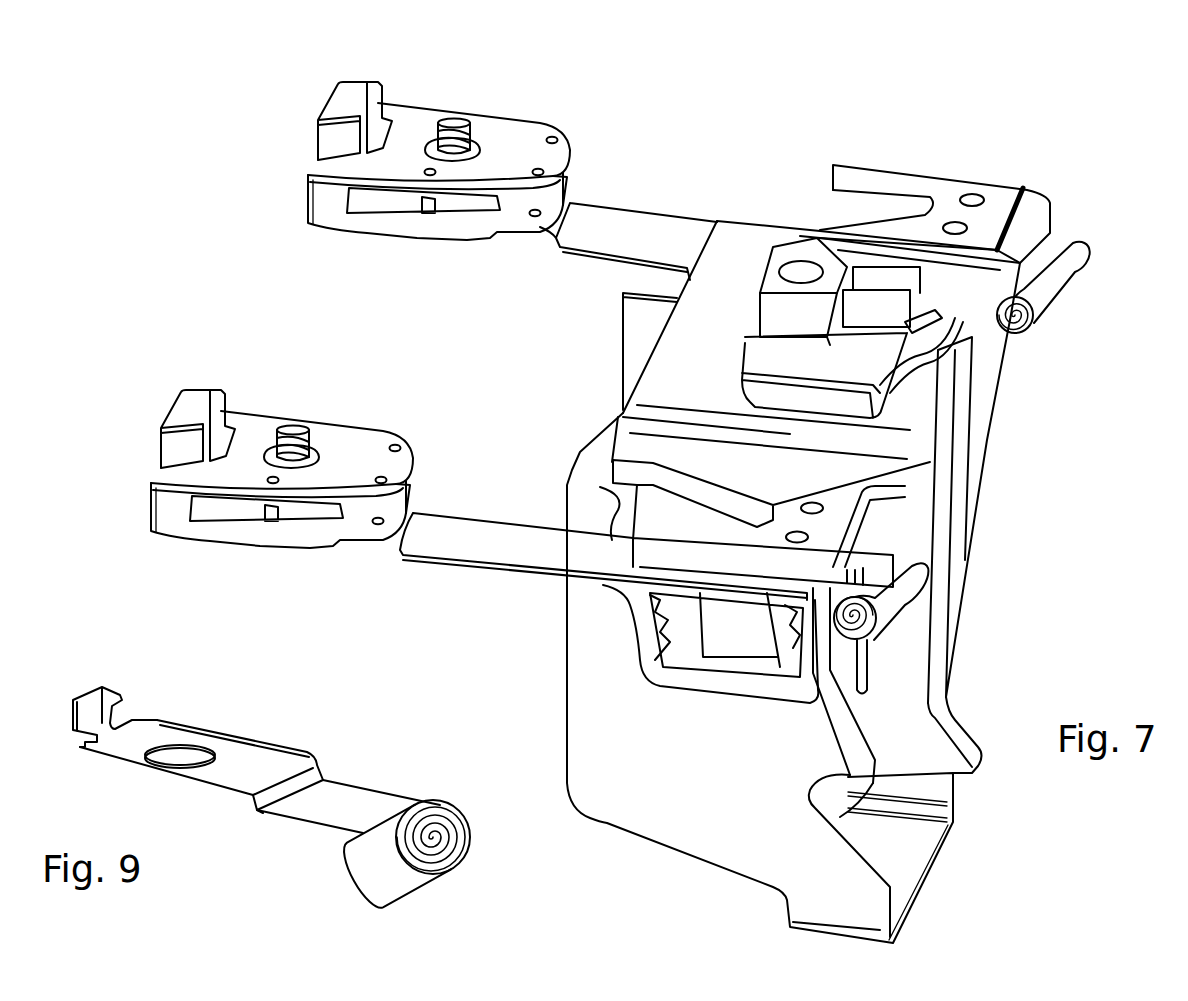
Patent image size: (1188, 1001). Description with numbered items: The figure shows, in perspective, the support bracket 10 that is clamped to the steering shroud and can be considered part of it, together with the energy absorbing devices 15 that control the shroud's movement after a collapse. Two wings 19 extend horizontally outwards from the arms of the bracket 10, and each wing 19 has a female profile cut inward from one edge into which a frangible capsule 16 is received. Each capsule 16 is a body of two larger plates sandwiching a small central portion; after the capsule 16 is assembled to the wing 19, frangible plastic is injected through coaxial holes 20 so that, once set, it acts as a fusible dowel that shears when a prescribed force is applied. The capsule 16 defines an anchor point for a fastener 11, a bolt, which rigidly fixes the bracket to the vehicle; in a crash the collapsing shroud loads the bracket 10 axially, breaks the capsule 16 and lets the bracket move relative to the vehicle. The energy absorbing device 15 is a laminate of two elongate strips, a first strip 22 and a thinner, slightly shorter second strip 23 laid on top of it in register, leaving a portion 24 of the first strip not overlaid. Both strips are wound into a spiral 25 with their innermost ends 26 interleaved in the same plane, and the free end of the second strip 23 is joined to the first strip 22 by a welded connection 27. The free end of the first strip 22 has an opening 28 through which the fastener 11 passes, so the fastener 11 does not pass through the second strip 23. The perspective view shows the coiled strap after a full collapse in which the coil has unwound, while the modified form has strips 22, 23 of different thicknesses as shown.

In FIG. 7, the support bracket 10 is at (668, 832).
In FIG. 7, the fastener 11 is at (449, 118).
In FIG. 7, the energy absorbing device 15 is at (1060, 287).
In FIG. 7, the frangible capsule 16 is at (520, 122).
In FIG. 7, the wing 19 is at (990, 180).
In FIG. 7, the holes 20 is at (556, 138).
In FIG. 9, the first strip 22 is at (203, 733).
In FIG. 9, the second strip 23 is at (270, 813).
In FIG. 9, the portion of the first strip 24 is at (252, 740).
In FIG. 9, the spiral 25 is at (436, 893).
In FIG. 9, the innermost ends 26 is at (433, 833).
In FIG. 9, the connection 27 is at (321, 778).
In FIG. 9, the opening 28 is at (168, 748).